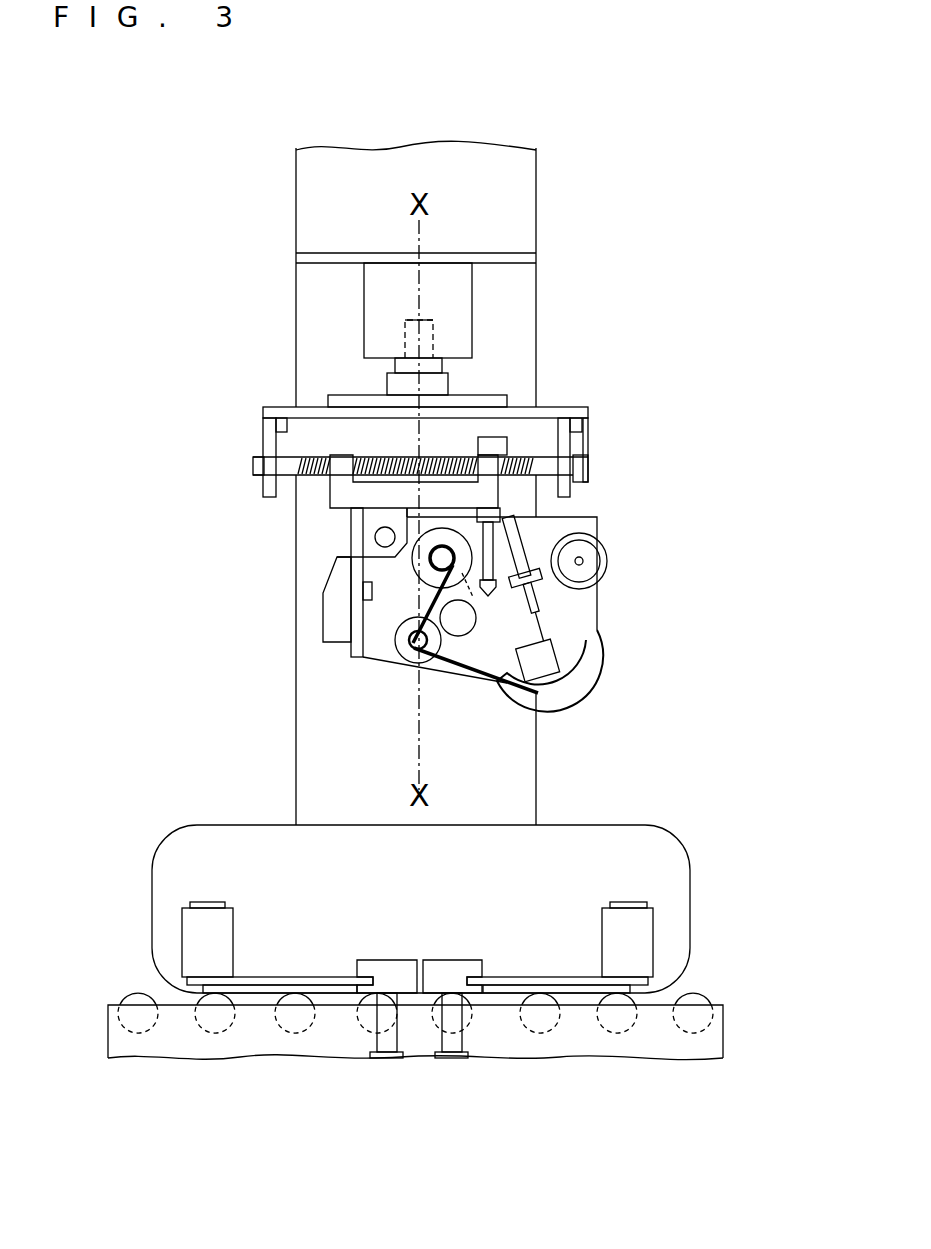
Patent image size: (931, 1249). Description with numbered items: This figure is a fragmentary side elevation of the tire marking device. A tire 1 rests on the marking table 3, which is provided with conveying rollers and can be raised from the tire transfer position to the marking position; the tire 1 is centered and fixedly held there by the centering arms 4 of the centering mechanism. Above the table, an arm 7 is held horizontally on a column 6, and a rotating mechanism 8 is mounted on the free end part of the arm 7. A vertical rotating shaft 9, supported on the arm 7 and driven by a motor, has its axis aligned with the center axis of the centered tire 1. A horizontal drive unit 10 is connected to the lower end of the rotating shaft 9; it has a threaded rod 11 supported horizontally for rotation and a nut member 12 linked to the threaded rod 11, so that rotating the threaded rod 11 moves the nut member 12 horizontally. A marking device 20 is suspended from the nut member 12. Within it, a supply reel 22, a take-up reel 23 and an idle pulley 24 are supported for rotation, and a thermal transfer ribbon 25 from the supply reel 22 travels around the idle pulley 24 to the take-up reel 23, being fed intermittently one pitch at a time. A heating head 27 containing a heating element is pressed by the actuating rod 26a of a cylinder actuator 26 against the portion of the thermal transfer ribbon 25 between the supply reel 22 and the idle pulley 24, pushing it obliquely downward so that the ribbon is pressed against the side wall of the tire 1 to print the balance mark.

The tire 1 is at (200, 823).
The marking table 3 is at (709, 986).
The centering arms 4 is at (292, 975).
The column 6 is at (538, 752).
The arm 7 is at (473, 302).
The rotating mechanism 8 is at (334, 292).
The rotating shaft 9 is at (405, 345).
The horizontal drive unit 10 is at (298, 502).
The threaded rod 11 is at (549, 407).
The nut member 12 is at (355, 555).
The marking device 20 is at (613, 583).
The supply reel 22 is at (602, 542).
The take-up reel 23 is at (418, 570).
The idle pulley 24 is at (410, 670).
The thermal transfer ribbon 25 is at (597, 628).
The cylinder actuator 26 is at (526, 562).
The actuating rod 26a is at (481, 610).
The heating head 27 is at (558, 645).